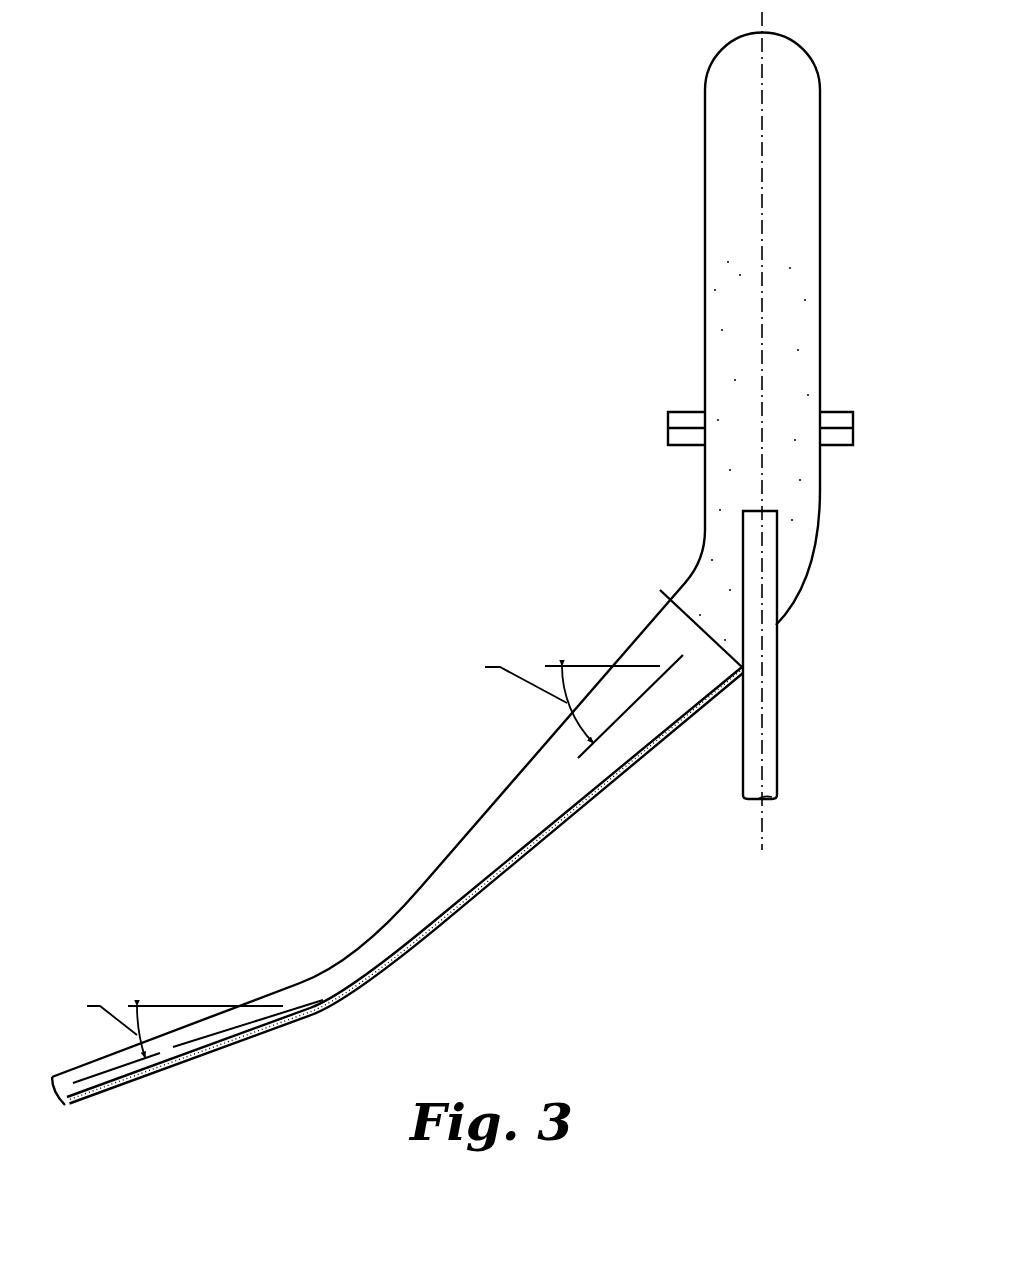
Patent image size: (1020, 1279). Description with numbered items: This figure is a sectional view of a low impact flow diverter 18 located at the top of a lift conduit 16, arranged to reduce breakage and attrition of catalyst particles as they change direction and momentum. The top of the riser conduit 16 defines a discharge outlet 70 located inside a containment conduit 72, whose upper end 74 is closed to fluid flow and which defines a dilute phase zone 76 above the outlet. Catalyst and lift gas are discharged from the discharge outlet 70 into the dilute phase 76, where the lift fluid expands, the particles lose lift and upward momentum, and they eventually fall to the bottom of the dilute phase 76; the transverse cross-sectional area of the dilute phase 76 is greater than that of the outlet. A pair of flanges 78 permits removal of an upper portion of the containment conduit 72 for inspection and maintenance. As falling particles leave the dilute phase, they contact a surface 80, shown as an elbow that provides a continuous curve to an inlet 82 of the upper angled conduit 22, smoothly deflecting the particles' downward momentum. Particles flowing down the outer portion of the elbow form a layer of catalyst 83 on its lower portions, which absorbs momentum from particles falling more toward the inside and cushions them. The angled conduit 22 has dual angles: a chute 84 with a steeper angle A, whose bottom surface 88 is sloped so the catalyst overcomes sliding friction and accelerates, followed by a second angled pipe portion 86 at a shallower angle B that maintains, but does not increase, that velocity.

The lift conduit 16 is at (777, 727).
The flow diverter 18 is at (642, 528).
The upper angled conduit 22 is at (463, 895).
The discharge outlet 70 is at (770, 510).
The containment conduit 72 is at (822, 255).
The upper end 74 is at (713, 66).
The dilute phase zone 76 is at (725, 257).
The flanges 78 is at (685, 408).
The surface 80 is at (805, 575).
The inlet 82 is at (660, 590).
The layer of catalyst 83 is at (647, 745).
The chute 84 is at (528, 763).
The second angled pipe portion 86 is at (207, 1018).
The bottom surface 88 is at (590, 797).